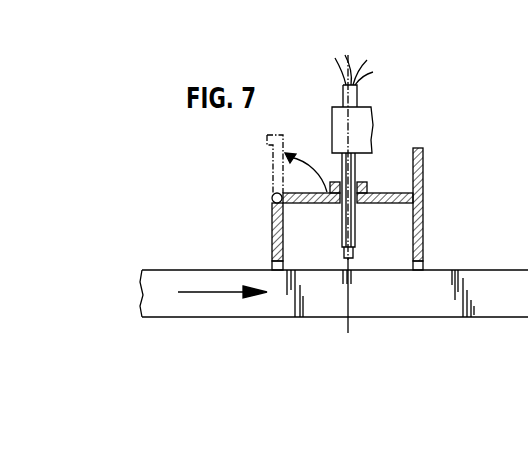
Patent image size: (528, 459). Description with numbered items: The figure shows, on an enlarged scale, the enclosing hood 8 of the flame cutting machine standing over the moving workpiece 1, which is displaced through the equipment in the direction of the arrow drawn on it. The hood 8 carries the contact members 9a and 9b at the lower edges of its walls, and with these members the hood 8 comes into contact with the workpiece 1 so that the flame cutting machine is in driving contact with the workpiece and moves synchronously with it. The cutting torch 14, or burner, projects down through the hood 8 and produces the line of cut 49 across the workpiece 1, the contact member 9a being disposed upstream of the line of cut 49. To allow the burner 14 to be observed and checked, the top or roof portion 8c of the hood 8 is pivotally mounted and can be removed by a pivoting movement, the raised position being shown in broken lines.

The workpiece 1 is at (162, 280).
The hood 8 is at (272, 222).
The top or roof portion 8c is at (283, 196).
The contact member 9a is at (272, 263).
The contact member 9b is at (423, 266).
The cutting torch 14 is at (356, 93).
The line of cut 49 is at (349, 325).